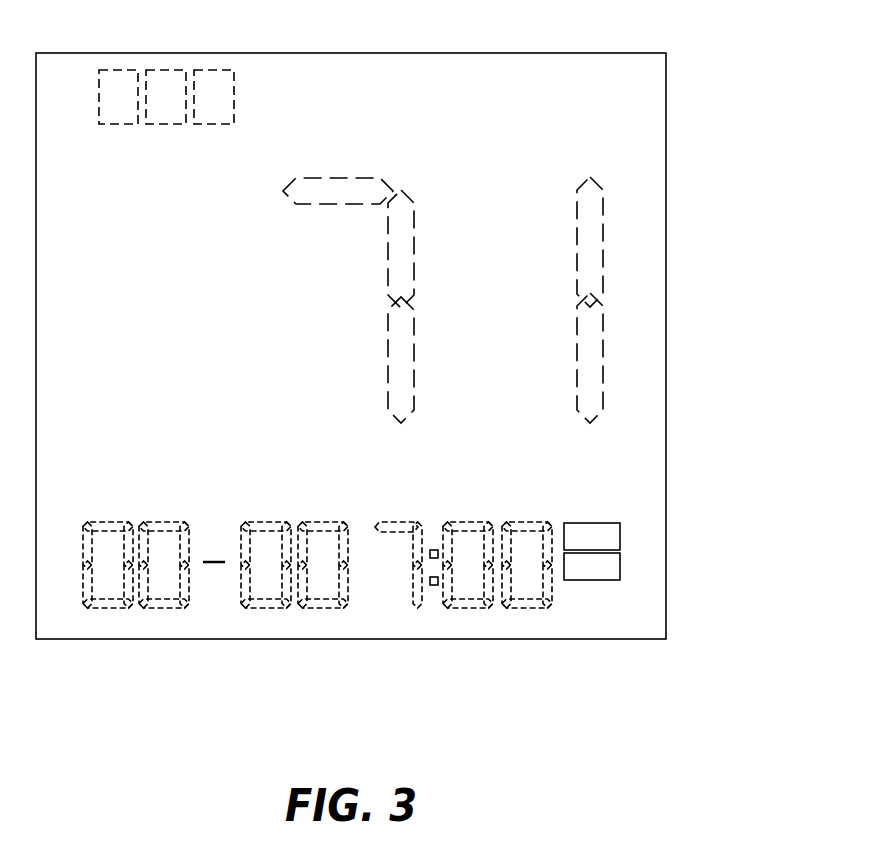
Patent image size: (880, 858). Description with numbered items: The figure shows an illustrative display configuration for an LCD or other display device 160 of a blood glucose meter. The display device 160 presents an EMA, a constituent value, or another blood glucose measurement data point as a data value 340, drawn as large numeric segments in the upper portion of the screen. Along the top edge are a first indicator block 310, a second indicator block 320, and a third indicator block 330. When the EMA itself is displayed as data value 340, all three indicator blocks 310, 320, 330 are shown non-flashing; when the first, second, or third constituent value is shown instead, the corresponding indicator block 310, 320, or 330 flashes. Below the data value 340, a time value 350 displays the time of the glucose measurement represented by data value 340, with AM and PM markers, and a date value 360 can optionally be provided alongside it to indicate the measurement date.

The display device 160 is at (666, 145).
The first indicator block 310 is at (227, 70).
The second indicator block 320 is at (158, 70).
The third indicator block 330 is at (105, 70).
The data value 340 is at (600, 317).
The time value 350 is at (447, 602).
The date value 360 is at (219, 601).